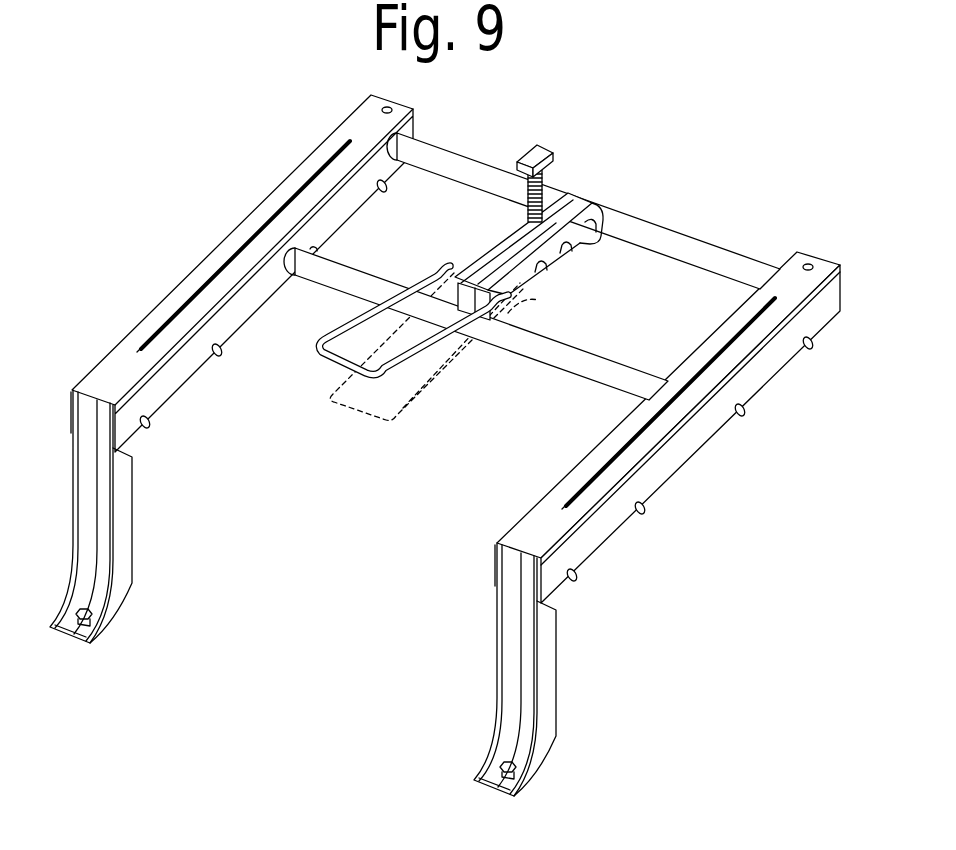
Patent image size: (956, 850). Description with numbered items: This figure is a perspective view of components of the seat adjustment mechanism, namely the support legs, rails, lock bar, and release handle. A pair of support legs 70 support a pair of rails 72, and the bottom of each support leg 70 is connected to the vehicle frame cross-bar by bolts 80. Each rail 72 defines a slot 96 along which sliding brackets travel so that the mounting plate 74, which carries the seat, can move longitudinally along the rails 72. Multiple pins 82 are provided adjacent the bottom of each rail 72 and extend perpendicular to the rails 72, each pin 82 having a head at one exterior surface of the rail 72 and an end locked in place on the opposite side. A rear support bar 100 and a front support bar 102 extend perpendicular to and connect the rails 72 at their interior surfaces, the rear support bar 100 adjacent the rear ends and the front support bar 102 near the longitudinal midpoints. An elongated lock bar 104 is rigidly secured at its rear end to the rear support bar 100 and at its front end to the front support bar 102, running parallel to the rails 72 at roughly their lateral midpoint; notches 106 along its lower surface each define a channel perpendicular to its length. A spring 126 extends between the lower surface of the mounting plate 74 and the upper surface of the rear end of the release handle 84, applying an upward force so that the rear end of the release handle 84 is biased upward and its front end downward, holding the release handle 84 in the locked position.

The support legs 70 is at (128, 512).
The rails 72 is at (108, 353).
The mounting plate 74 is at (545, 150).
The bolts 80 is at (77, 632).
The pins 82 is at (152, 424).
The release handle 84 is at (326, 352).
The slot 96 is at (303, 193).
The rear support bar 100 is at (730, 268).
The front support bar 102 is at (588, 371).
The lock bar 104 is at (575, 207).
The notches 106 is at (567, 250).
The spring 126 is at (524, 187).